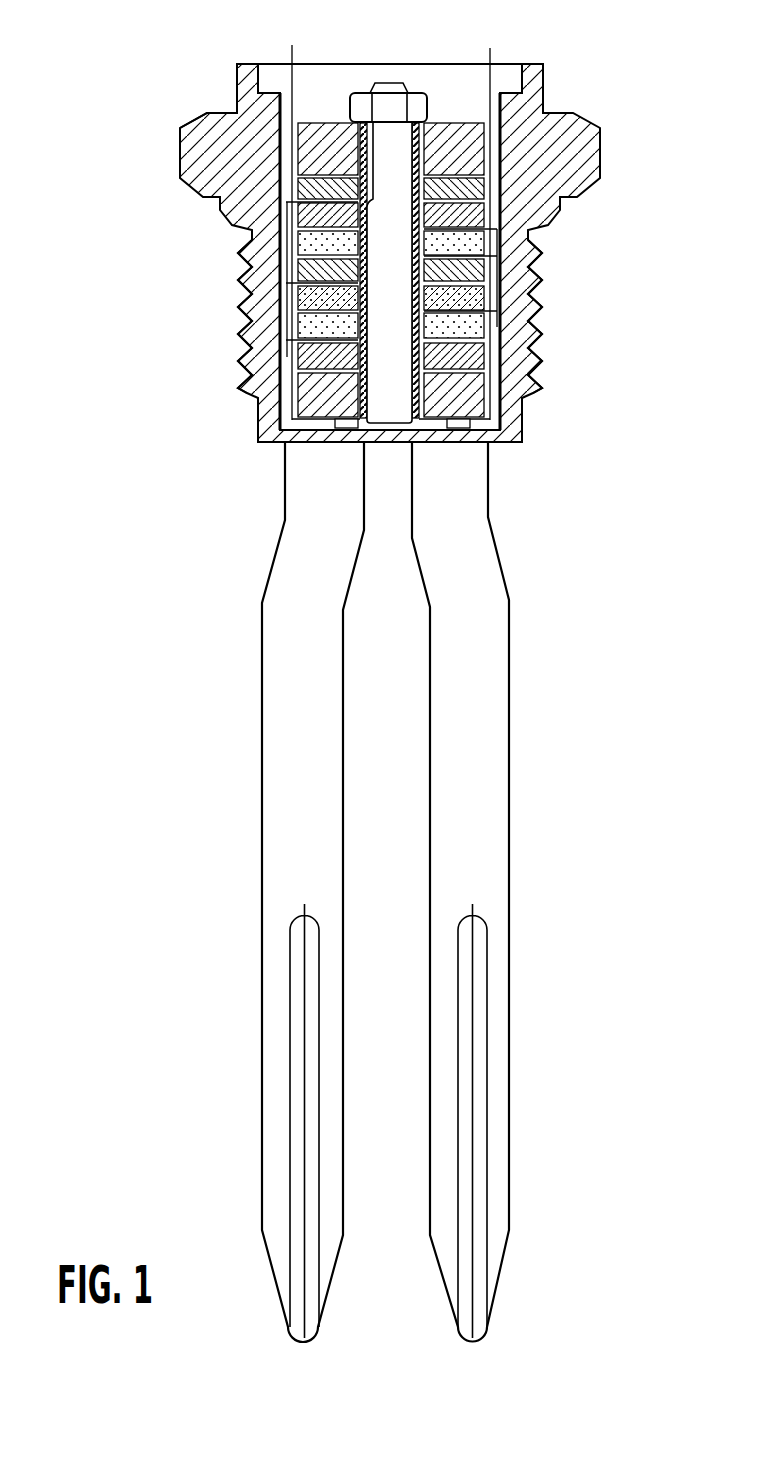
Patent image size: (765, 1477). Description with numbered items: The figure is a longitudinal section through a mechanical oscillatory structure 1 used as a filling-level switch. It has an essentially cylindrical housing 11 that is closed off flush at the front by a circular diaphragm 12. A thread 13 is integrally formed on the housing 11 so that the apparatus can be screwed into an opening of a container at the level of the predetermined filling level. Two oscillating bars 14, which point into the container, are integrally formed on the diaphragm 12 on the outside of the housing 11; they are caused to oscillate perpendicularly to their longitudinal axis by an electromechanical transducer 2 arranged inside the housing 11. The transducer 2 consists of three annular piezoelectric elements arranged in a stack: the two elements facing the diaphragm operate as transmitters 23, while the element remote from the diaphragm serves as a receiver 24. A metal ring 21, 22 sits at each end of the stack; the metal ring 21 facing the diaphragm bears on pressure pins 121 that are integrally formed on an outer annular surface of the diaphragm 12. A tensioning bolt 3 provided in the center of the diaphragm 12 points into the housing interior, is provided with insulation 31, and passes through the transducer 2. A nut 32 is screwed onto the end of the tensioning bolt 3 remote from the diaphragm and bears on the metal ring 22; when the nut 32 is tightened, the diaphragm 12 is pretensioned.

The mechanical oscillatory structure 1 is at (553, 978).
The electromechanical transducer 2 is at (284, 116).
The tensioning bolt 3 is at (388, 247).
The housing 11 is at (572, 167).
The diaphragm 12 is at (500, 433).
The pressure pins 121 is at (467, 426).
The thread 13 is at (543, 337).
The oscillating bars 14 is at (302, 547).
The metal ring 21 is at (307, 390).
The metal ring 22 is at (312, 148).
The transmitters 23 is at (297, 327).
The receiver 24 is at (455, 246).
The insulation 31 is at (297, 365).
The nut 32 is at (422, 102).